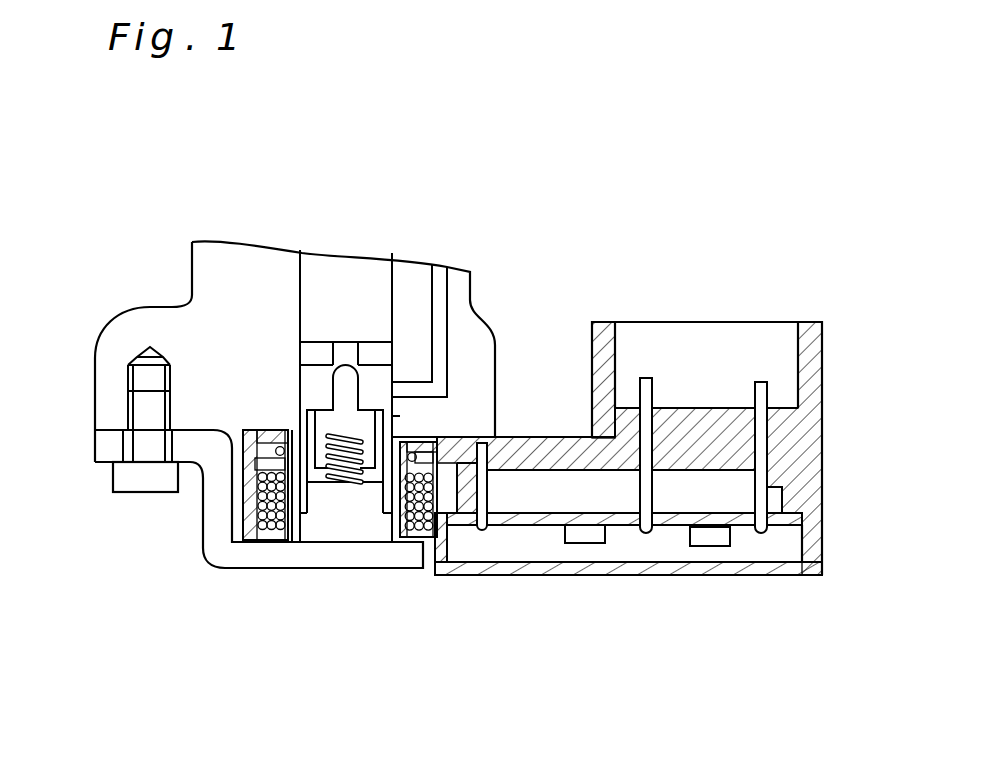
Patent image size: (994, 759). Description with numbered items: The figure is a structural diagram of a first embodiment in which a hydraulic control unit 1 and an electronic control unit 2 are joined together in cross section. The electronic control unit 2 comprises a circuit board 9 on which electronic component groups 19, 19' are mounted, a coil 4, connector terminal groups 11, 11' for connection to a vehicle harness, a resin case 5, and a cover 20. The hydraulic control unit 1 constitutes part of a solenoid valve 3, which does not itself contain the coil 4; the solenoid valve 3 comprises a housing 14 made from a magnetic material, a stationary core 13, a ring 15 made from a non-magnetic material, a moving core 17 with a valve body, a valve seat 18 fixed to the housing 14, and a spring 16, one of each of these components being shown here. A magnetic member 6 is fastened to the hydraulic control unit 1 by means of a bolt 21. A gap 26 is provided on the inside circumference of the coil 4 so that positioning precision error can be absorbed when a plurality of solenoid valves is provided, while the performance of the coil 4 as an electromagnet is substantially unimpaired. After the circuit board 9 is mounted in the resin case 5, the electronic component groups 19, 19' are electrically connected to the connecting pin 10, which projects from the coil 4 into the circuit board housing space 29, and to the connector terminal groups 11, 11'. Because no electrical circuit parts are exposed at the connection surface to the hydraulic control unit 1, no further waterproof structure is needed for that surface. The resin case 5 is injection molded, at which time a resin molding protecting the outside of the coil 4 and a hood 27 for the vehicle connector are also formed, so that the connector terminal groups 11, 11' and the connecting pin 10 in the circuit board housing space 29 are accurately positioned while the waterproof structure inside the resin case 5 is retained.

The hydraulic control unit 1 is at (160, 305).
The electronic control unit 2 is at (823, 402).
The solenoid valve 3 is at (332, 381).
The coil 4 is at (406, 441).
The resin case 5 is at (535, 453).
The magnetic member 6 is at (110, 445).
The circuit board 9 is at (792, 525).
The connecting pin 10 is at (482, 531).
The connector terminal group 11 is at (644, 384).
The connector terminal group 11' is at (752, 385).
The stationary core 13 is at (357, 527).
The housing 14 is at (124, 344).
The ring 15 is at (394, 415).
The spring 16 is at (340, 434).
The moving core 17 is at (352, 370).
The valve seat 18 is at (343, 366).
The electronic component group 19 is at (721, 586).
The electronic component group 19' is at (592, 583).
The cover 20 is at (816, 575).
The bolt 21 is at (130, 481).
The gap 26 is at (295, 540).
The hood 27 is at (806, 322).
The circuit board housing space 29 is at (658, 545).